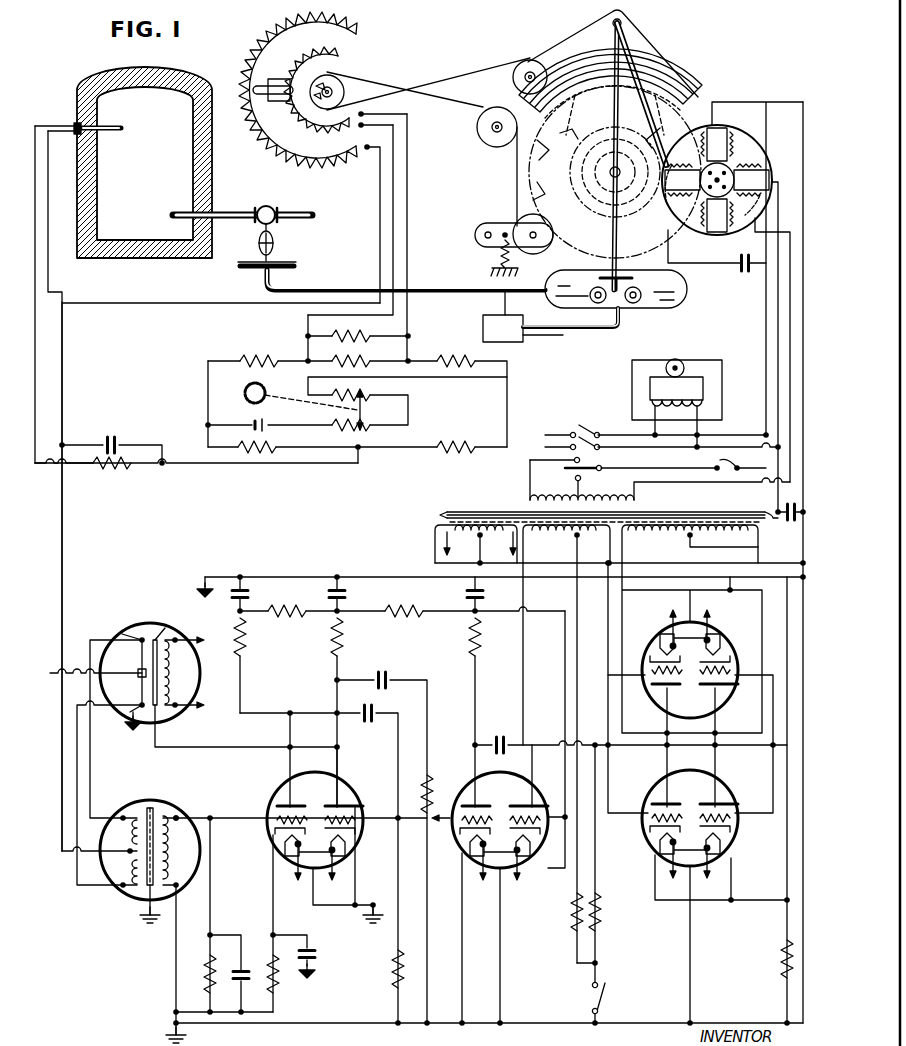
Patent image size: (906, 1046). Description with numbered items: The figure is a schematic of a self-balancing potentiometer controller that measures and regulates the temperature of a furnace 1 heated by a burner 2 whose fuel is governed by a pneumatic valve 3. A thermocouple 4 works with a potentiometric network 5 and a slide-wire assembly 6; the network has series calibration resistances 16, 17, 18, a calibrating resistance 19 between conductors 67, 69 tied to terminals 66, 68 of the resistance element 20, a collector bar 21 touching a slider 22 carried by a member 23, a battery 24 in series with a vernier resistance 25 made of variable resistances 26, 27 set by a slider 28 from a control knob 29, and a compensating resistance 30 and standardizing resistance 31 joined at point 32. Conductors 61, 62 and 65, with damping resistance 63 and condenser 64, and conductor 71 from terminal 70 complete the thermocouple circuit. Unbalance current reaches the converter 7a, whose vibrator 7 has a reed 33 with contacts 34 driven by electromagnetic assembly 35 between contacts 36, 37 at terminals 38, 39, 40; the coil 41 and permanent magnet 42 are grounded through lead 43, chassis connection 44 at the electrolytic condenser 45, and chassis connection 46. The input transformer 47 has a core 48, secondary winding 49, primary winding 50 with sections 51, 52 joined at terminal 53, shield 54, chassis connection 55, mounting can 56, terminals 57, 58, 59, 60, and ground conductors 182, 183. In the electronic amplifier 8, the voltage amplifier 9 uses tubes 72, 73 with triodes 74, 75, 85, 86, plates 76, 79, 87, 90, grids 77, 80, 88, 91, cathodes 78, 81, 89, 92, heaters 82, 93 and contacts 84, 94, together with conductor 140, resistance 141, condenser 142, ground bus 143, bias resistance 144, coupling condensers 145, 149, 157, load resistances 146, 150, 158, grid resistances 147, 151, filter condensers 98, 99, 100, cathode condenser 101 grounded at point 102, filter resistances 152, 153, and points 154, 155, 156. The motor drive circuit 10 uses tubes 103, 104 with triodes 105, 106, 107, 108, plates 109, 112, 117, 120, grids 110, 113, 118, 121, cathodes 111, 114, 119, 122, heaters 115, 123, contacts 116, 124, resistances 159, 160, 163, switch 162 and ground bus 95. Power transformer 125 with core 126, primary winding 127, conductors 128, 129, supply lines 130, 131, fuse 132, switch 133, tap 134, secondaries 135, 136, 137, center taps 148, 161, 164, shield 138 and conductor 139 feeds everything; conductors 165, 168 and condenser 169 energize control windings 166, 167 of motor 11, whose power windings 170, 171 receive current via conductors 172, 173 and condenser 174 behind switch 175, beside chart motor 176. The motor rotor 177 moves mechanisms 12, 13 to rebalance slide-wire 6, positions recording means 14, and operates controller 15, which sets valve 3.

The furnace 1 is at (140, 62).
The burner 2 is at (176, 211).
The pneumatic valve 3 is at (268, 205).
The thermocouple 4 is at (121, 128).
The potentiometric network 5 is at (235, 344).
The slide-wire resistance assembly 6 is at (250, 44).
The vibrator 7 is at (153, 622).
The converter 7a is at (128, 577).
The electronic amplifier 8 is at (384, 518).
The voltage amplifier 9 is at (403, 660).
The motor drive circuit 10 is at (730, 954).
The reversible drive motor 11 is at (730, 132).
The mechanism 12 is at (694, 91).
The mechanism 13 is at (486, 54).
The indicating and recording means 14 is at (676, 46).
The controller 15 is at (652, 307).
The resistance 16 is at (254, 360).
The resistance 17 is at (349, 360).
The resistance 18 is at (458, 360).
The calibrating resistance 19 is at (356, 336).
The resistance element 20 is at (308, 45).
The collector bar 21 is at (285, 28).
The slider 22 is at (280, 78).
The member 23 is at (344, 92).
The battery 24 is at (255, 412).
The vernier resistance 25 is at (432, 418).
The variable resistance 26 is at (356, 396).
The variable resistance 27 is at (361, 428).
The slider 28 is at (364, 408).
The control knob 29 is at (248, 388).
The compensating resistance 30 is at (258, 446).
The standardizing resistance 31 is at (450, 446).
The point 32 is at (362, 449).
The reed 33 is at (124, 673).
The contacts 34 is at (138, 674).
The electromagnetic assembly 35 is at (164, 710).
The contact 36 is at (142, 680).
The contact 37 is at (140, 668).
The terminal 38 is at (107, 670).
The terminal 39 is at (128, 710).
The terminal 40 is at (136, 636).
The coil 41 is at (172, 675).
The permanent magnet 42 is at (165, 628).
The lead 43 is at (220, 747).
The chassis connection 44 is at (366, 917).
The multiple section electrolytic condenser 45 is at (248, 556).
The chassis connection 46 is at (130, 732).
The input transformer 47 is at (88, 944).
The core 48 is at (149, 806).
The secondary winding 49 is at (170, 860).
The center-tapped primary winding 50 is at (132, 892).
The winding section 51 is at (134, 832).
The winding section 52 is at (136, 874).
The terminal 53 is at (130, 853).
The shield 54 is at (163, 807).
The chassis connection 55 is at (146, 924).
The mounting can 56 is at (154, 800).
The terminal 57 is at (124, 814).
The terminal 58 is at (123, 885).
The terminal 59 is at (178, 818).
The terminal 60 is at (178, 888).
The conductor 61 is at (62, 398).
The conductor 62 is at (40, 468).
The resistance 63 is at (124, 472).
The condenser 64 is at (108, 434).
The conductor 65 is at (281, 465).
The terminal 66 is at (361, 127).
The conductor 67 is at (342, 313).
The terminal 68 is at (370, 112).
The conductor 69 is at (409, 246).
The terminal 70 is at (364, 147).
The conductor 71 is at (153, 303).
The vacuum tube 72 is at (322, 774).
The vacuum tube 73 is at (498, 774).
The triode 74 is at (278, 806).
The triode 75 is at (346, 800).
The plate 76 is at (288, 790).
The grid 77 is at (276, 826).
The cathode 78 is at (276, 833).
The plate 79 is at (341, 782).
The grid 80 is at (318, 806).
The cathode 81 is at (355, 845).
The heater 82 is at (296, 858).
The central contact 84 is at (314, 889).
The triode 85 is at (429, 782).
The triode 86 is at (536, 800).
The plate 87 is at (474, 784).
The grid 88 is at (429, 842).
The cathode 89 is at (484, 870).
The plate 90 is at (525, 784).
The grid 91 is at (503, 806).
The cathode 92 is at (556, 739).
The heater 93 is at (518, 868).
The central contact 94 is at (500, 885).
The ground bus 95 is at (344, 1026).
The filter condenser 98 is at (249, 594).
The filter condenser 99 is at (346, 594).
The filter condenser 100 is at (482, 593).
The cathode condenser section 101 is at (312, 952).
The ground point 102 is at (198, 588).
The vacuum tube 103 is at (675, 732).
The vacuum tube 104 is at (698, 770).
The triode section 105 is at (648, 690).
The triode section 106 is at (735, 690).
The triode section 107 is at (648, 804).
The triode section 108 is at (734, 804).
The plate 109 is at (660, 704).
The grid 110 is at (646, 680).
The cathode 111 is at (648, 667).
The plate 112 is at (730, 704).
The grid 113 is at (732, 680).
The cathode 114 is at (733, 668).
The heater 115 is at (674, 630).
The socket contact 116 is at (704, 632).
The plate 117 is at (656, 792).
The grid 118 is at (648, 816).
The cathode 119 is at (646, 827).
The plate 120 is at (725, 794).
The grid 121 is at (734, 816).
The cathode 122 is at (733, 827).
The heater 123 is at (712, 862).
The socket contact 124 is at (678, 874).
The power transformer 125 is at (498, 502).
The core 126 is at (735, 510).
The primary winding 127 is at (594, 498).
The conductor 128 is at (686, 477).
The conductor 129 is at (696, 484).
The supply line 130 is at (720, 435).
The supply line 131 is at (646, 448).
The fuse 132 is at (729, 472).
The switch 133 is at (588, 462).
The tap 134 is at (574, 492).
The secondary winding 135 is at (482, 538).
The secondary winding 136 is at (567, 536).
The secondary winding 137 is at (668, 536).
The shield 138 is at (772, 511).
The conductor 139 is at (436, 525).
The conductor 140 is at (232, 816).
The resistance 141 is at (210, 967).
The condenser 142 is at (234, 974).
The ground bus 143 is at (273, 1011).
The cathode bias resistance 144 is at (269, 974).
The coupling condenser 145 is at (370, 708).
The load resistance 146 is at (247, 645).
The resistance 147 is at (396, 967).
The center tap 148 is at (482, 535).
The coupling condenser 149 is at (382, 666).
The plate resistance 150 is at (330, 647).
The variable grid resistance 151 is at (426, 808).
The filter resistance 152 is at (414, 614).
The filter resistance 153 is at (286, 614).
The point 154 is at (480, 616).
The point 155 is at (342, 614).
The point 156 is at (236, 616).
The coupling condenser 157 is at (504, 730).
The plate load resistance 158 is at (468, 647).
The resistance 159 is at (598, 920).
The resistance 160 is at (575, 920).
The tap 161 is at (578, 535).
The switch 162 is at (603, 995).
The resistance 163 is at (780, 956).
The center tap 164 is at (693, 536).
The conductor 165 is at (778, 318).
The control winding 166 is at (701, 234).
The control winding 167 is at (728, 160).
The conductor 168 is at (802, 346).
The condenser 169 is at (790, 520).
The power winding 170 is at (672, 206).
The power winding 171 is at (748, 196).
The conductor 172 is at (766, 301).
The conductor 173 is at (790, 332).
The condenser 174 is at (742, 254).
The switch 175 is at (580, 428).
The chart-driving motor 176 is at (632, 373).
The motor rotor 177 is at (740, 172).
The conductor 182 is at (174, 967).
The conductor 183 is at (150, 909).